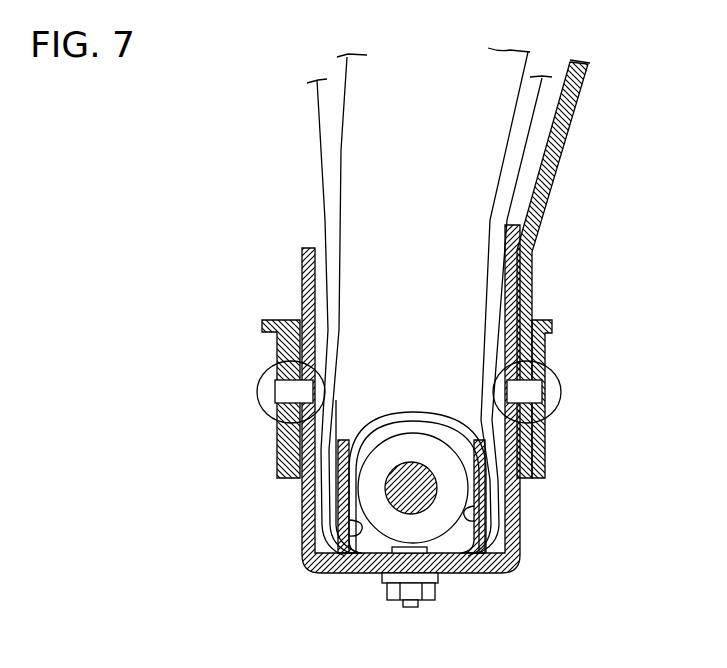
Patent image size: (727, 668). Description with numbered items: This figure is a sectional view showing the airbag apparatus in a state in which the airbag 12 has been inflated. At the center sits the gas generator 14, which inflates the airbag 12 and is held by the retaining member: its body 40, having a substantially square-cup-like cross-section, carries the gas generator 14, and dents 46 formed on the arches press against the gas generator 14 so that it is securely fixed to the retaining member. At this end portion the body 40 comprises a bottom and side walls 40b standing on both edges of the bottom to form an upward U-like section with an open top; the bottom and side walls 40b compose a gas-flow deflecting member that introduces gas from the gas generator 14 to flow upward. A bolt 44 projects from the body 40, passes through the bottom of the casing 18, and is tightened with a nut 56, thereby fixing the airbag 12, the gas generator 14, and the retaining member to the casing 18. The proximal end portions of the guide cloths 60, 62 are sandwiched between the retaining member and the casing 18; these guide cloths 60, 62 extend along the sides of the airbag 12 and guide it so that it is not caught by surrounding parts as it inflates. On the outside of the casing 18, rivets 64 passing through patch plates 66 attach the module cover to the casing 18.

The airbag 12 is at (345, 72).
The gas generator 14 is at (392, 500).
The casing 18 is at (522, 546).
The body 40 is at (482, 572).
The side walls 40b is at (305, 541).
The bolts 44 is at (413, 607).
The dents 46 is at (372, 430).
The nuts 56 is at (385, 592).
The guide cloth 60 is at (322, 136).
The guide cloth 62 is at (548, 130).
The rivets 64 is at (257, 392).
The patch plates 66 is at (272, 322).